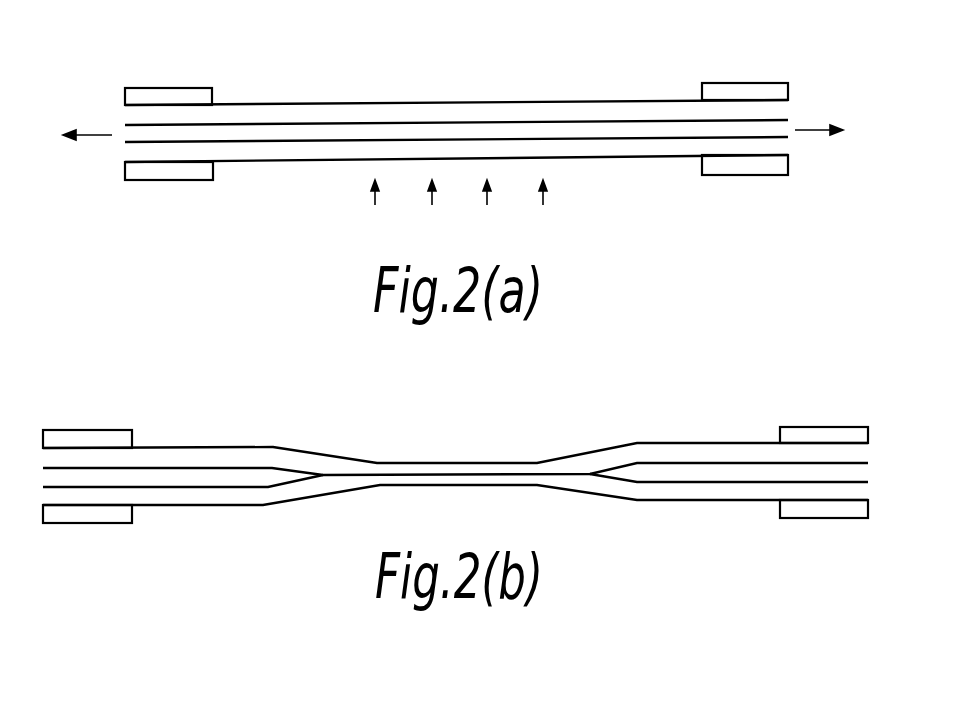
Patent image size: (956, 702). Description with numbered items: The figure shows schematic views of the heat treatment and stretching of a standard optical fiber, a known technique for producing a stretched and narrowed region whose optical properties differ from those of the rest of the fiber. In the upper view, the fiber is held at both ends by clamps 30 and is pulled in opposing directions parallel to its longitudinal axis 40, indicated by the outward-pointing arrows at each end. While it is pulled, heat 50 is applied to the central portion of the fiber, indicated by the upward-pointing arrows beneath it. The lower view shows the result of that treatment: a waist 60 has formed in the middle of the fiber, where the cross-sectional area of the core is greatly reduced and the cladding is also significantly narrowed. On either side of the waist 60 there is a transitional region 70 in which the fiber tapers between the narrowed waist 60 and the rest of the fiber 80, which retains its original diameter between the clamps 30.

In FIG. 2A, the clamps 30 is at (175, 88).
In FIG. 2A, the longitudinal axis 40 is at (103, 135).
In FIG. 2A, the heat 50 is at (459, 213).
In FIG. 2B, the waist 60 is at (513, 462).
In FIG. 2B, the transitional region 70 is at (307, 503).
In FIG. 2B, the rest of the fiber 80 is at (173, 448).